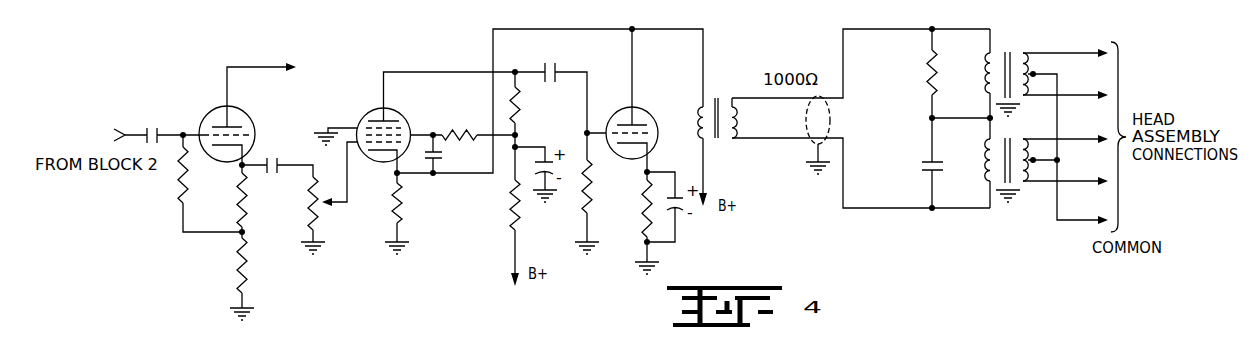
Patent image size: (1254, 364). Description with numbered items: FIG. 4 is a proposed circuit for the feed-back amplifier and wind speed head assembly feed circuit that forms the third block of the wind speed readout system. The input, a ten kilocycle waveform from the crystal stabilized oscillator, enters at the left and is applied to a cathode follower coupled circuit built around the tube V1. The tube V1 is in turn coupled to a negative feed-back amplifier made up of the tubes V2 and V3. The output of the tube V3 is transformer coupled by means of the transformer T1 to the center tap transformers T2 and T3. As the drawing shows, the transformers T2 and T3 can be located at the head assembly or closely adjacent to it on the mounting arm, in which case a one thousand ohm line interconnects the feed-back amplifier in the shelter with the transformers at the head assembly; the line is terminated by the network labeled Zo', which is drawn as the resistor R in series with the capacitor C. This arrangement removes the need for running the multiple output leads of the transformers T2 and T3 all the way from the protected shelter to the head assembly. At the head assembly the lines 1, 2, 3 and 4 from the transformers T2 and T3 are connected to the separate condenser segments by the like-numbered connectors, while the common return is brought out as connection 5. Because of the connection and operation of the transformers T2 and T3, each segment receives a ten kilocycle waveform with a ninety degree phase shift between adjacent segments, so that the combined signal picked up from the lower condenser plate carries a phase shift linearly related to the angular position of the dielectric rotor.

The tube V1 is at (259, 107).
The tube V2 is at (414, 122).
The tube V3 is at (639, 104).
The transformer T1 is at (717, 138).
The center tap transformer T2 is at (1006, 83).
The center tap transformer T3 is at (1007, 163).
The terminating resistor R is at (940, 73).
The terminating capacitor C is at (937, 163).
The terminating impedance network Zo' is at (892, 107).
The line 1 is at (1065, 130).
The line 2 is at (1065, 45).
The line 3 is at (1065, 172).
The line 4 is at (1065, 86).
The head assembly common connection 5 is at (1068, 147).